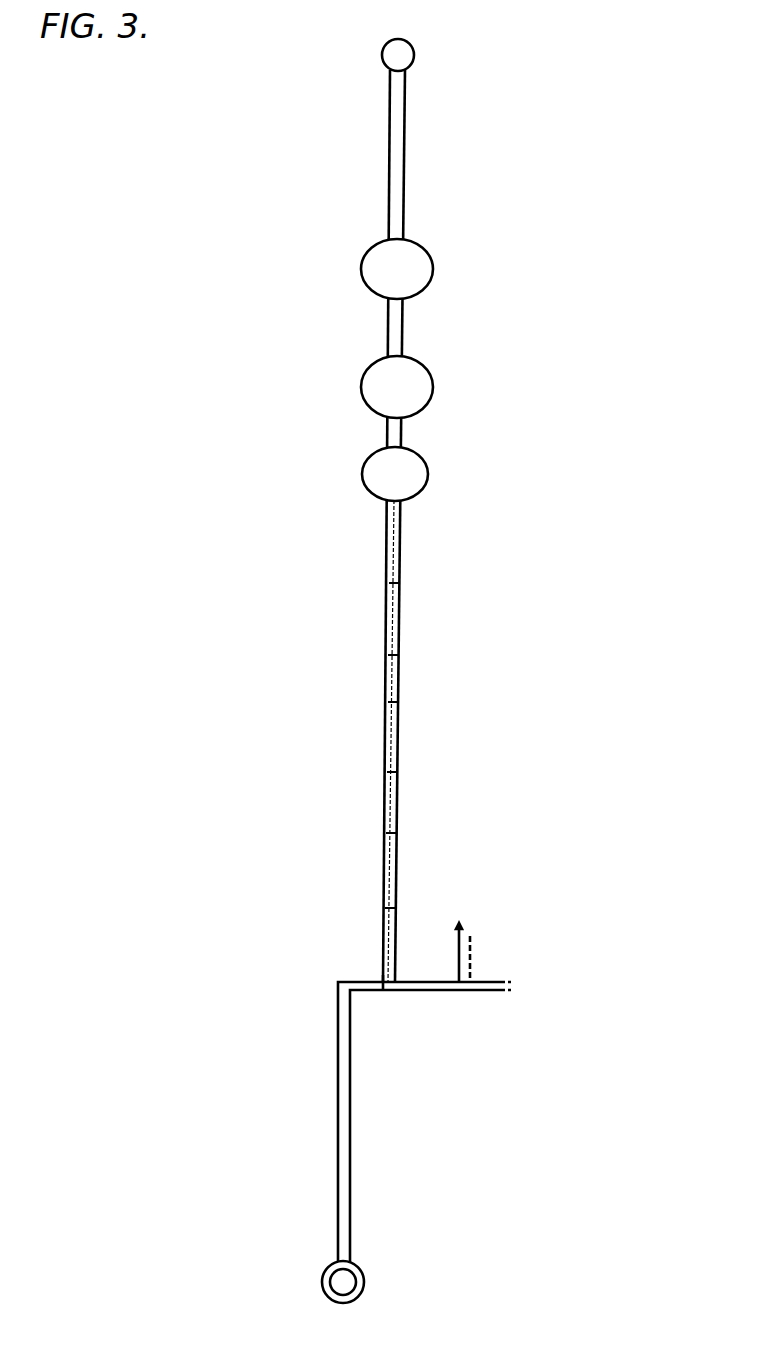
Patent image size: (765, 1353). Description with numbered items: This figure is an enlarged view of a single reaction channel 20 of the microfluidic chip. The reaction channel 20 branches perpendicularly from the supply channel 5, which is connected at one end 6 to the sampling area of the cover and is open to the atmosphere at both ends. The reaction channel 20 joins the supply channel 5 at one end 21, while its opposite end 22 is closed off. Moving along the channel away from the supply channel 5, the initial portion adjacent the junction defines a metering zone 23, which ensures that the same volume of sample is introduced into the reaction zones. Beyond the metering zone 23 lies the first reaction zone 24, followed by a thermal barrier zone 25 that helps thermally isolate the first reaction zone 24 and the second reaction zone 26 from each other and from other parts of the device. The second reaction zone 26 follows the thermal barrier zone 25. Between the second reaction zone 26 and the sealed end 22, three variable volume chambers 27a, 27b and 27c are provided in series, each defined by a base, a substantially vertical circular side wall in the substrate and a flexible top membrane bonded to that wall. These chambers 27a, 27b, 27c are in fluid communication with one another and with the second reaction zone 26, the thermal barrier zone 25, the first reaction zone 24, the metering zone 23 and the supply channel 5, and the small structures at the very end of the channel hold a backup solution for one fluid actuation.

The reaction channel 20 is at (403, 535).
The end of reaction channel connected to supply channel 21 is at (389, 984).
The closed end of reaction channel 22 is at (388, 53).
The metering zone 23 is at (370, 908).
The first reaction zone 24 is at (370, 833).
The thermal barrier zone 25 is at (372, 702).
The second reaction zone 26 is at (372, 582).
The variable volume chamber 27a is at (365, 467).
The variable volume chamber 27b is at (363, 383).
The variable volume chamber 27c is at (363, 266).
The supply channel 5 is at (492, 990).
The end of supply channel 6 is at (322, 1282).